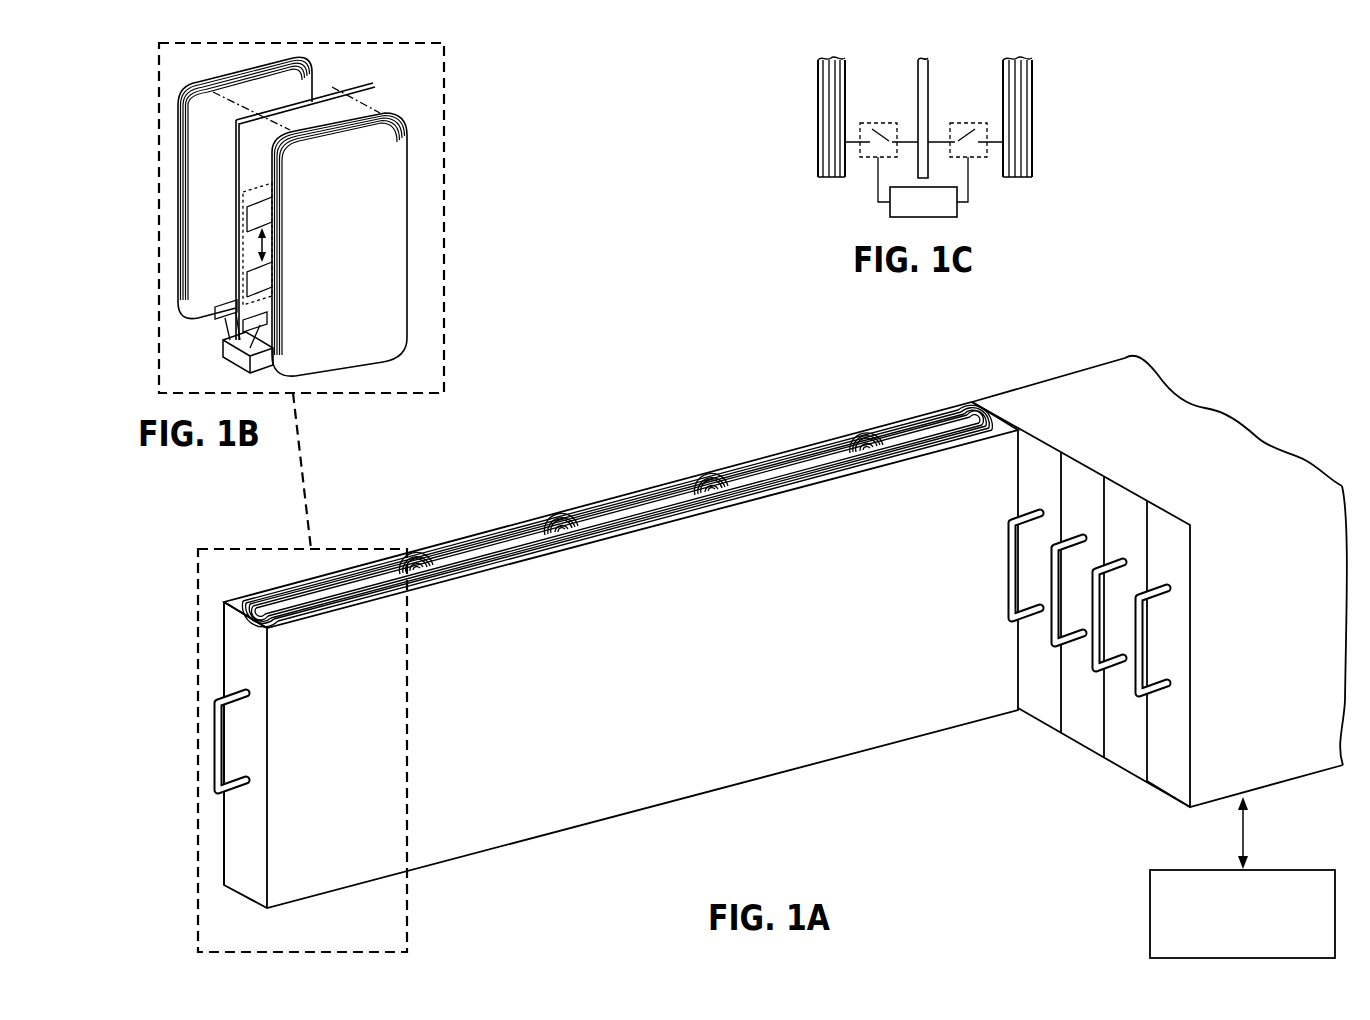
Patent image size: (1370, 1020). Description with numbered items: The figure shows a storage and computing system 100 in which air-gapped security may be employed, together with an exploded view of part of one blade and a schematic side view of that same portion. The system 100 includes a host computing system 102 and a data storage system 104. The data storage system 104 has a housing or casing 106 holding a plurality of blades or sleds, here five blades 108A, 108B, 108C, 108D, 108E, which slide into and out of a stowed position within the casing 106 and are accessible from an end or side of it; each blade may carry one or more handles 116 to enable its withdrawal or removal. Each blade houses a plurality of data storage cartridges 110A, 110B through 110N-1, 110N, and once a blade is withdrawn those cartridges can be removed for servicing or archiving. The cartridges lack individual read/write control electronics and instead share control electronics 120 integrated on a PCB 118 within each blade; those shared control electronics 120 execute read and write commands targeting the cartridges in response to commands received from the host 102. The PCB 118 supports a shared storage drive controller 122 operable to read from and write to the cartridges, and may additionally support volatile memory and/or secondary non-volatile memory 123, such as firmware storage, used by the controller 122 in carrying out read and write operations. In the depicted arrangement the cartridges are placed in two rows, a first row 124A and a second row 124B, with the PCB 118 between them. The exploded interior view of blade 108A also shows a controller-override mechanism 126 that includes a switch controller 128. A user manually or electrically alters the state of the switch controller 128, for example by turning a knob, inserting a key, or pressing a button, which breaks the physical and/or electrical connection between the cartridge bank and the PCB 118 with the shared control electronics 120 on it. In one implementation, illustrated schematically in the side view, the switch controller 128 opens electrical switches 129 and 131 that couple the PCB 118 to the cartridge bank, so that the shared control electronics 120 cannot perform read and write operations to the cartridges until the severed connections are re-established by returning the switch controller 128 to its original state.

In FIG. 1A, the storage and computing system 100 is at (655, 633).
In FIG. 1A, the host computing system 102 is at (1227, 950).
In FIG. 1A, the data storage system 104 is at (1159, 547).
In FIG. 1A, the housing or casing 106 is at (1117, 385).
In FIG. 1A, the blade 108A is at (569, 633).
In FIG. 1A, the blade 108B is at (994, 641).
In FIG. 1A, the blade 108C is at (1083, 727).
In FIG. 1A, the blade 108D is at (1127, 750).
In FIG. 1A, the blade 108E is at (1167, 778).
In FIG. 1B, the data storage cartridge 110A is at (203, 98).
In FIG. 1C, the data storage cartridge 110A is at (822, 158).
In FIG. 1A, the data storage cartridge 110A is at (355, 570).
In FIG. 1B, the data storage cartridge 110B is at (375, 127).
In FIG. 1C, the data storage cartridge 110B is at (1027, 147).
In FIG. 1A, the data storage cartridge 110B is at (285, 605).
In FIG. 1A, the data storage cartridge 110N is at (870, 437).
In FIG. 1A, the data storage cartridge 110N-1 is at (965, 412).
In FIG. 1A, the handle 116 is at (1050, 620).
In FIG. 1B, the PCB 118 is at (325, 108).
In FIG. 1C, the PCB 118 is at (923, 90).
In FIG. 1B, the shared control electronics 120 is at (182, 228).
In FIG. 1B, the shared storage drive controller 122 is at (258, 222).
In FIG. 1B, the volatile memory and/or secondary non-volatile memory 123 is at (258, 285).
In FIG. 1A, the first row 124A is at (225, 620).
In FIG. 1A, the second row 124B is at (245, 645).
In FIG. 1B, the controller-override mechanism 126 is at (289, 325).
In FIG. 1B, the switch controller 128 is at (230, 357).
In FIG. 1C, the switch controller 128 is at (957, 210).
In FIG. 1B, the switch 129 is at (222, 308).
In FIG. 1C, the switch 129 is at (868, 160).
In FIG. 1B, the switch 131 is at (260, 323).
In FIG. 1C, the switch 131 is at (975, 160).